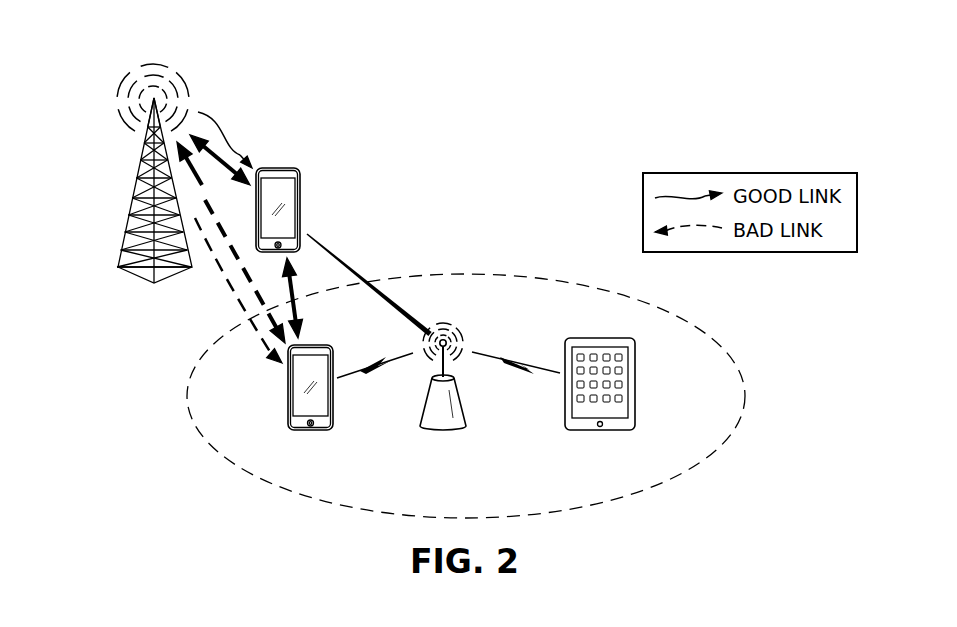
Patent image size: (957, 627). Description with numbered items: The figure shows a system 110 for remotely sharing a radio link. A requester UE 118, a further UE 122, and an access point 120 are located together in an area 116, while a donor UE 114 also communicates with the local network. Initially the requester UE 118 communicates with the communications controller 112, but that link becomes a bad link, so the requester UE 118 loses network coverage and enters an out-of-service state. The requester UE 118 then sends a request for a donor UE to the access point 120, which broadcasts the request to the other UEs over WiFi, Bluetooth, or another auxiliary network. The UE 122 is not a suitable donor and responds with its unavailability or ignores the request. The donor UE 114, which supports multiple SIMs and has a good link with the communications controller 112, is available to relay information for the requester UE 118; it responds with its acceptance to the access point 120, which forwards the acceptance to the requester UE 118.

The system for remotely sharing a radio link 110 is at (690, 85).
The communications controller 112 is at (133, 192).
The donor UE 114 is at (277, 168).
The area 116 is at (760, 420).
The requester UE 118 is at (288, 386).
The access point 120 is at (458, 397).
The UE 122 is at (635, 386).